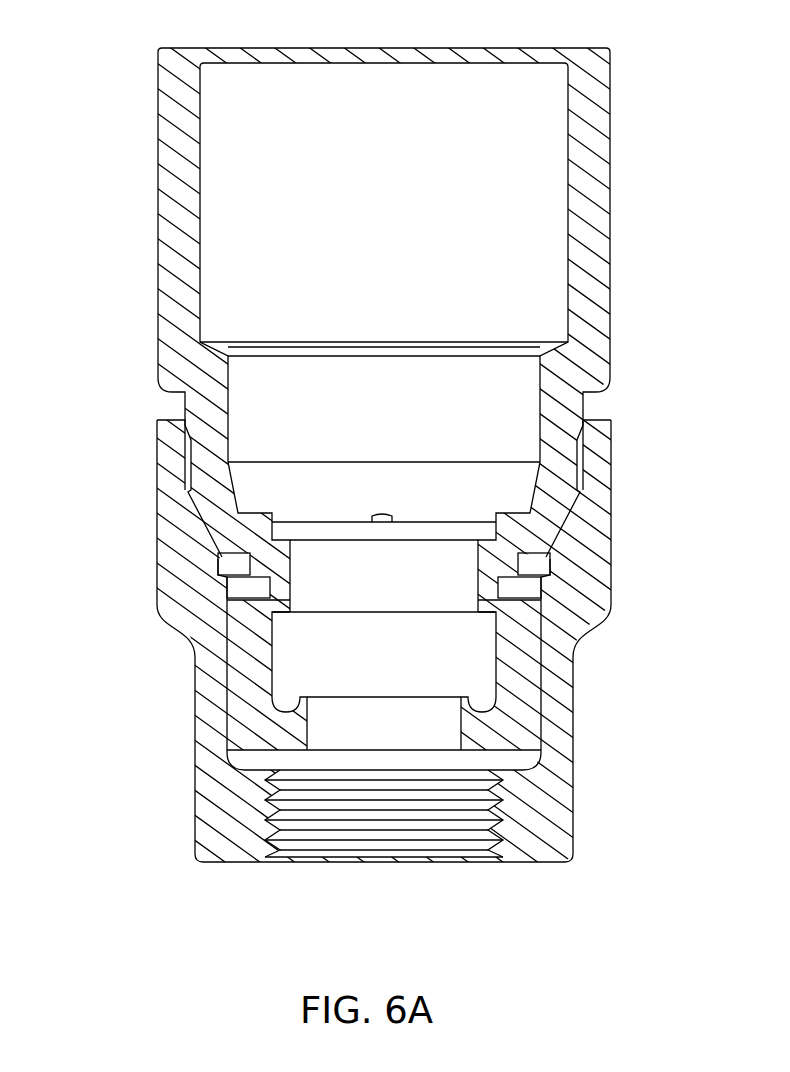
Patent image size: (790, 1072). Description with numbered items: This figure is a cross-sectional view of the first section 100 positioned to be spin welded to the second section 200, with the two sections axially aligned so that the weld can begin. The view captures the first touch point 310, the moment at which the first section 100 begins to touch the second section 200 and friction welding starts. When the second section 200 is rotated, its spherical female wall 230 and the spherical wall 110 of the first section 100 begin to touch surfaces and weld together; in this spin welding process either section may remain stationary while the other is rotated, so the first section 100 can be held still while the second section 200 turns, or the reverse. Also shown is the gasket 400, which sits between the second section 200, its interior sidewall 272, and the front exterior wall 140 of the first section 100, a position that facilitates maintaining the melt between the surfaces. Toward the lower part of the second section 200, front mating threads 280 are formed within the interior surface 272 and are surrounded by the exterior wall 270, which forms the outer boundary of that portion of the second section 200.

The first section 100 is at (146, 148).
The spherical wall 110 is at (553, 542).
The front exterior wall 140 is at (548, 628).
The second section 200 is at (144, 541).
The spherical female wall 230 is at (606, 598).
The exterior wall 270 is at (195, 830).
The interior sidewall 272 is at (510, 830).
The front mating threads 280 is at (287, 858).
The first touch point 310 is at (226, 555).
The gasket 400 is at (240, 718).